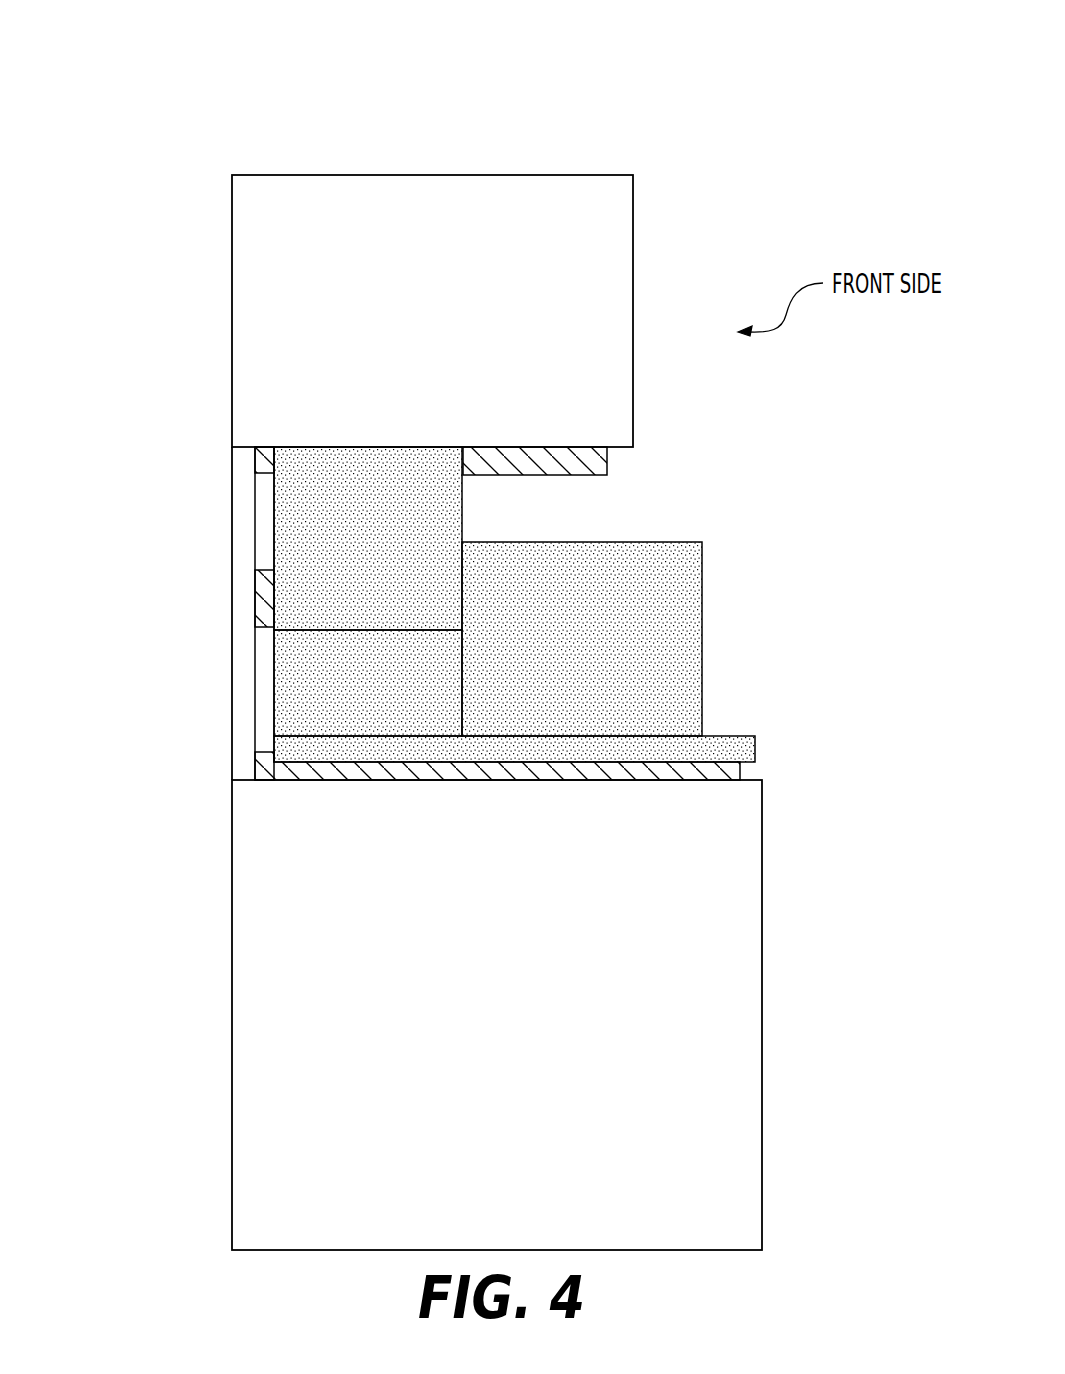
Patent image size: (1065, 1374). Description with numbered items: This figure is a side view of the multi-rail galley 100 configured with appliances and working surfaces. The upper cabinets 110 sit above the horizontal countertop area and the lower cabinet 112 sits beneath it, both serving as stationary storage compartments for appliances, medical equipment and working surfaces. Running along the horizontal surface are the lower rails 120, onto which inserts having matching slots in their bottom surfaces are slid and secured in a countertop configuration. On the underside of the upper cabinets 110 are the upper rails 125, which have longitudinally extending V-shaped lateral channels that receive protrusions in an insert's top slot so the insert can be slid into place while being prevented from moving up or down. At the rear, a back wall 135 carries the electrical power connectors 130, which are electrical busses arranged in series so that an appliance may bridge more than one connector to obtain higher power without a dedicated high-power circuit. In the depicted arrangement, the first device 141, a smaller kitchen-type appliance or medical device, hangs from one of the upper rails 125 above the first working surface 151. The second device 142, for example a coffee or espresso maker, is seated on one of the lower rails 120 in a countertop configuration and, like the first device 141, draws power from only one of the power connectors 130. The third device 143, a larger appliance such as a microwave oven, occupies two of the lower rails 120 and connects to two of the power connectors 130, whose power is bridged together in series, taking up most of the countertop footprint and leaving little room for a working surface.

The multi-rail galley 100 is at (108, 99).
The upper cabinets 110 is at (255, 245).
The lower cabinet 112 is at (257, 1015).
The lower rails 120 is at (738, 773).
The upper rails 125 is at (603, 464).
The electrical power connectors 130 is at (258, 598).
The back wall 135 is at (240, 487).
The first device 141 is at (380, 548).
The second device 142 is at (380, 696).
The third device 143 is at (600, 653).
The first working surface 151 is at (736, 742).